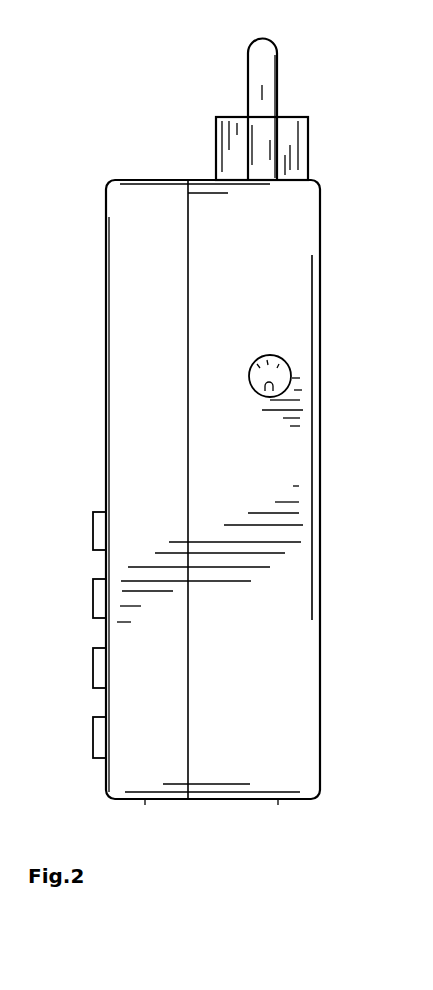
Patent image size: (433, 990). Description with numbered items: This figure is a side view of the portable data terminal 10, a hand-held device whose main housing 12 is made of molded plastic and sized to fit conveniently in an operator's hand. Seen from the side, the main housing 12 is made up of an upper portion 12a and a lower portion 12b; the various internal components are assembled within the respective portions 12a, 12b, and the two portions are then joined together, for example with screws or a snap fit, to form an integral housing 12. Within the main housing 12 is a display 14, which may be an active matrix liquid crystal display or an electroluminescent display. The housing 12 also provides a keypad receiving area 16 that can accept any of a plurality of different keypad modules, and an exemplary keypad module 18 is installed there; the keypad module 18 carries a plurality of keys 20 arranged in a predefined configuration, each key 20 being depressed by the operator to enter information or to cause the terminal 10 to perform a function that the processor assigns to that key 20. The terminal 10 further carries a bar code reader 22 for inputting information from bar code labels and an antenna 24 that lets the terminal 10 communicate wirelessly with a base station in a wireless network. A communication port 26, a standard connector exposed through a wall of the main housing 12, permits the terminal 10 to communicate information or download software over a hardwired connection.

The portable data terminal 10 is at (187, 468).
The main housing 12 is at (211, 848).
The upper portion 12a is at (145, 800).
The lower portion 12b is at (254, 826).
The display 14 is at (94, 317).
The keypad receiving area 16 is at (79, 665).
The keypad module 18 is at (100, 704).
The keys 20 is at (93, 598).
The bar code reader 22 is at (290, 143).
The antenna 24 is at (262, 63).
The communication port 26 is at (282, 360).